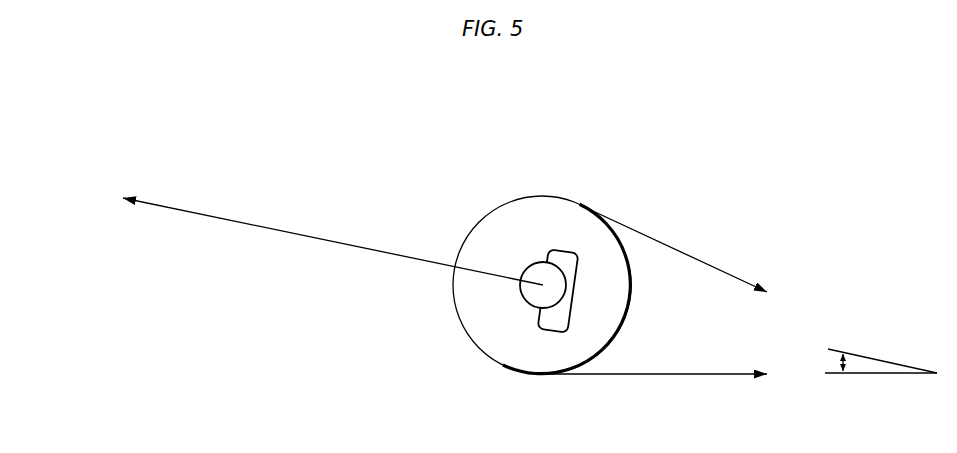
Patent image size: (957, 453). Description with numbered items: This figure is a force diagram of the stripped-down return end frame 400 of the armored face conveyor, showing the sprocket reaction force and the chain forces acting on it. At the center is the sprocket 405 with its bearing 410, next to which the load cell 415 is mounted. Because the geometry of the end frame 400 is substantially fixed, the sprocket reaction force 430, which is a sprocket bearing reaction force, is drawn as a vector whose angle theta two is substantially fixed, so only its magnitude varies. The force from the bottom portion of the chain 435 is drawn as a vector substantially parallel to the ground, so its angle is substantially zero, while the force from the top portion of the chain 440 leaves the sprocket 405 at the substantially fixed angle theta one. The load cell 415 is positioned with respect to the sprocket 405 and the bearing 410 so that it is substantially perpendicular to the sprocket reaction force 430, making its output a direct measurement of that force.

The end frame 400 is at (601, 139).
The sprocket 405 is at (485, 218).
The bearing 410 is at (535, 268).
The load cell 415 is at (573, 292).
The sprocket reaction force 430 is at (393, 257).
The force from the bottom portion of the chain 435 is at (690, 375).
The force from the top portion of the chain 440 is at (695, 260).